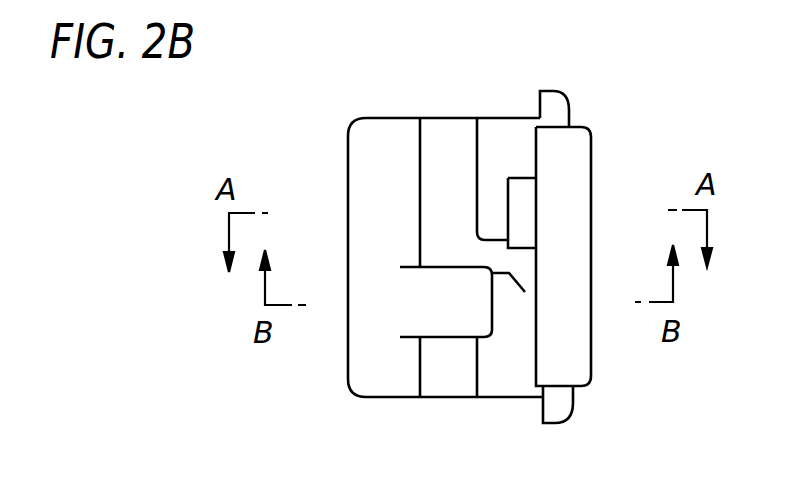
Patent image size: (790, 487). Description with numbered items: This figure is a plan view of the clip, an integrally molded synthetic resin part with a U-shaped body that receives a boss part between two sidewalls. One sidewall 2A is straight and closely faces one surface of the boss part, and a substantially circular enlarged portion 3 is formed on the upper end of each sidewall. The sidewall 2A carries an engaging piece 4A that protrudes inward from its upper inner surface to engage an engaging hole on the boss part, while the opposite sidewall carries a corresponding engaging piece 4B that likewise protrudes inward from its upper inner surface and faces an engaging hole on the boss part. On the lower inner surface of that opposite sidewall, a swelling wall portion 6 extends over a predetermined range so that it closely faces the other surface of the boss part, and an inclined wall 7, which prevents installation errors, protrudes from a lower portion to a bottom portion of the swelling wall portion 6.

The enlarged portion 3 is at (351, 168).
The sidewall 2A is at (557, 100).
The swelling wall portion 6 is at (445, 137).
The engaging piece 4A is at (520, 190).
The engaging piece 4B is at (455, 312).
The inclined wall 7 is at (503, 257).